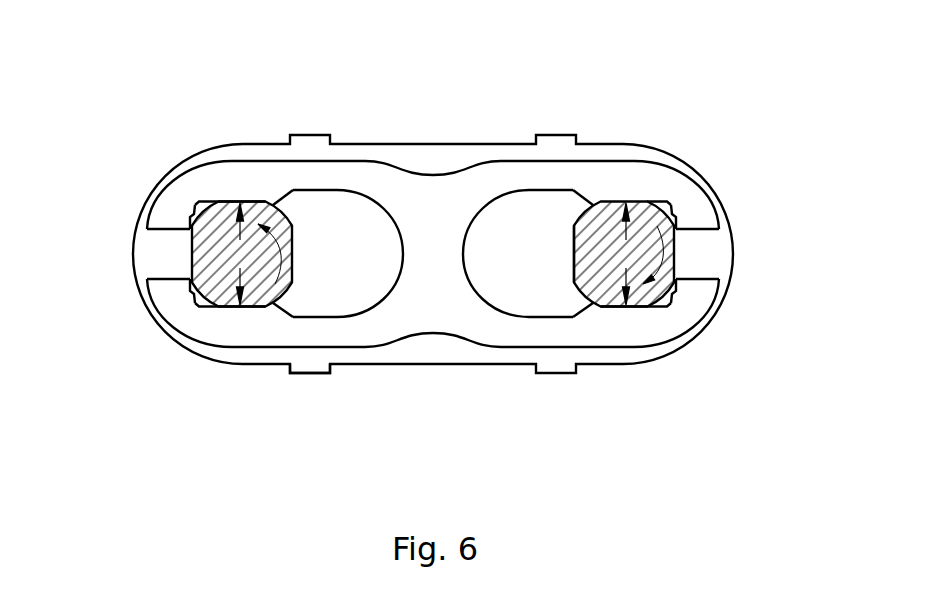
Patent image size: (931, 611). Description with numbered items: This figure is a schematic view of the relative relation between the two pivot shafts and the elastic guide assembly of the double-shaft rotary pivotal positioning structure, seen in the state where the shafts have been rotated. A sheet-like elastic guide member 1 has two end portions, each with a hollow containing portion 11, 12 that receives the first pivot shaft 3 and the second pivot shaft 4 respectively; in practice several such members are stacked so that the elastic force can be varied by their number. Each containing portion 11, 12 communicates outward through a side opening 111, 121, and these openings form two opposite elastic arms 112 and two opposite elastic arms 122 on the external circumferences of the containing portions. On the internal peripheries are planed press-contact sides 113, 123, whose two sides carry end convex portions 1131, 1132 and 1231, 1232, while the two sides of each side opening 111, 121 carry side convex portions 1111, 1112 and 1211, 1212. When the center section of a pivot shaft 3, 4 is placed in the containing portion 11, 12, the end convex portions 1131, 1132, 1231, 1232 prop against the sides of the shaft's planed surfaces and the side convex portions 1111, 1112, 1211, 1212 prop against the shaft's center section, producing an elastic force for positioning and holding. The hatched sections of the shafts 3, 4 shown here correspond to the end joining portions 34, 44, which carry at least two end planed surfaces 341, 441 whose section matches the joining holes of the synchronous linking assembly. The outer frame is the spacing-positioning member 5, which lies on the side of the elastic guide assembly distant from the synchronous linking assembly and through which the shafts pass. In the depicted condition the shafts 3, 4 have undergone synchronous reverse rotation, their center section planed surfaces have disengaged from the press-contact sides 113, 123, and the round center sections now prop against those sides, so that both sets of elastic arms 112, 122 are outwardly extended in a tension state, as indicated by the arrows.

The elastic guide member 1 is at (402, 159).
The spacing-positioning member 5 is at (430, 143).
The containing portion 11 is at (635, 241).
The side opening 111 is at (702, 242).
The side convex portion 1111 is at (678, 223).
The side convex portion 1112 is at (679, 286).
The elastic arm 112 is at (650, 310).
The press-contact side 113 is at (678, 257).
The end convex portion 1131 is at (653, 199).
The end convex portion 1132 is at (573, 206).
The containing portion 12 is at (230, 249).
The side opening 121 is at (160, 244).
The side convex portion 1211 is at (188, 214).
The side convex portion 1212 is at (186, 293).
The elastic arm 122 is at (317, 360).
The press-contact side 123 is at (190, 253).
The end convex portion 1231 is at (194, 202).
The end convex portion 1232 is at (293, 189).
The first pivot shaft 3 is at (574, 307).
The end joining portion 34 is at (622, 311).
The end planed surface 341 is at (574, 259).
The second pivot shaft 4 is at (258, 260).
The end joining portion 44 is at (212, 307).
The end planed surface 441 is at (215, 200).